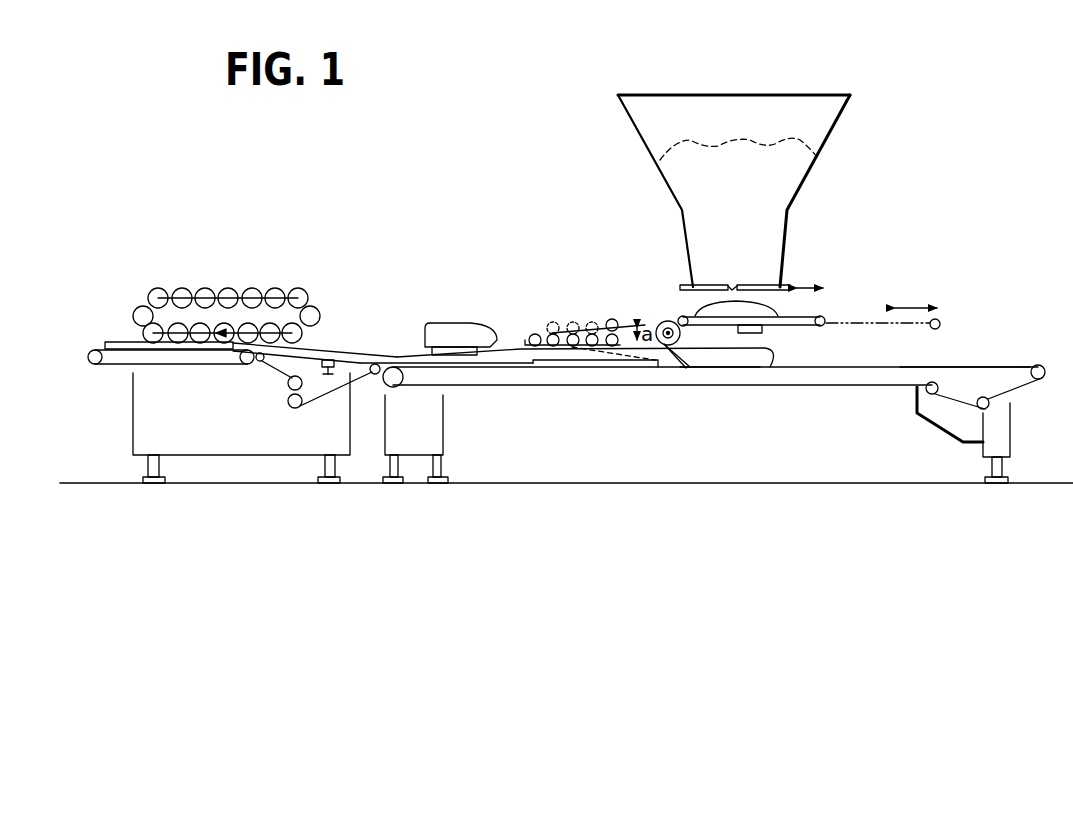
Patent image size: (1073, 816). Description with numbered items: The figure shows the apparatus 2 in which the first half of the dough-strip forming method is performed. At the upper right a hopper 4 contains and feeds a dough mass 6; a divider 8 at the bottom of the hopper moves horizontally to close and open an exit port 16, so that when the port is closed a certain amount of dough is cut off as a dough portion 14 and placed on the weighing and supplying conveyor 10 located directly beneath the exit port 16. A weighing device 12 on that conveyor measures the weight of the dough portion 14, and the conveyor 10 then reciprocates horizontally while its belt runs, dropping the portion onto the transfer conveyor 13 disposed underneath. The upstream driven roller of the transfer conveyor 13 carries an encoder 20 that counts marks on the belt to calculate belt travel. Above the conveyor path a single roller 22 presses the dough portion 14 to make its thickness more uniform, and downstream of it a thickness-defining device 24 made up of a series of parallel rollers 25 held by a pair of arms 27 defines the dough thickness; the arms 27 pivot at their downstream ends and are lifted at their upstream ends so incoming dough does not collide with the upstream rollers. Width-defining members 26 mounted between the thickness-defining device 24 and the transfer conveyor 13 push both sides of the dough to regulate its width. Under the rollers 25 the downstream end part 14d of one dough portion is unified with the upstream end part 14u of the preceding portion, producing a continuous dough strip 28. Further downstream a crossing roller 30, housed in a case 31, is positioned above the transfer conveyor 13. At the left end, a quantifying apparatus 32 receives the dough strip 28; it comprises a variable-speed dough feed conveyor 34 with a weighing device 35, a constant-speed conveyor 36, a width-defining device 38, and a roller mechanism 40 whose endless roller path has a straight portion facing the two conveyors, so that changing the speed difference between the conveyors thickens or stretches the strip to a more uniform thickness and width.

The apparatus 2 is at (913, 80).
The hopper 4 is at (818, 95).
The dough mass 6 is at (790, 143).
The divider 8 is at (787, 284).
The weighing and supplying conveyor 10 is at (812, 320).
The weighing device 12 is at (758, 334).
The transfer conveyor 13 is at (990, 366).
The dough portion 14 is at (678, 321).
The upstream end part of dough portion 14u is at (672, 361).
The downstream end part of dough portion 14d is at (678, 352).
The exit port 16 is at (735, 287).
The encoder 20 is at (1038, 365).
The single roller 22 is at (655, 333).
The thickness-defining device 24 is at (563, 322).
The rollers 25 is at (587, 324).
The width-defining members 26 is at (558, 362).
The arms 27 is at (520, 336).
The dough strip 28 is at (512, 346).
The crossing roller 30 is at (455, 350).
The case 31 is at (455, 332).
The quantifying apparatus 32 is at (224, 288).
The variable-speed dough feed conveyor 34 is at (318, 385).
The weighing device 35 is at (337, 362).
The constant-speed conveyor 36 is at (185, 363).
The width-defining device 38 is at (205, 343).
The roller mechanism 40 is at (308, 303).